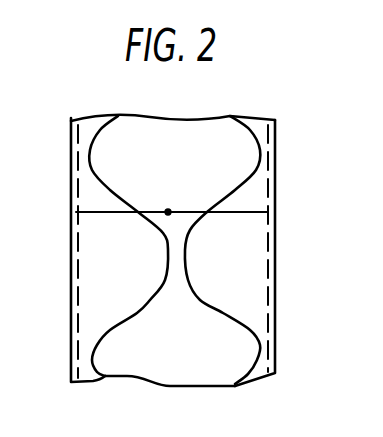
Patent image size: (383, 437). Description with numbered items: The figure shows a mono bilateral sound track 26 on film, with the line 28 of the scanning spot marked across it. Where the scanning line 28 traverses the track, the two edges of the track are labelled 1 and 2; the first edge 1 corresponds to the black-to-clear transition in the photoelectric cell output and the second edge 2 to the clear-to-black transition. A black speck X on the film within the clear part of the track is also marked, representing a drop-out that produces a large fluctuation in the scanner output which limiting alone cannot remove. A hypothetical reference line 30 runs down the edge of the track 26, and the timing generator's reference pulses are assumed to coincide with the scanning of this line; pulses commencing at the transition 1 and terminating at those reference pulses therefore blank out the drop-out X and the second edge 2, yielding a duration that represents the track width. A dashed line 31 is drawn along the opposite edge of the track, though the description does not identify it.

The first track edge 1 is at (139, 210).
The second track edge 2 is at (211, 209).
The black speck X is at (168, 209).
The mono bilateral sound track 26 is at (247, 160).
The scanning line 28 is at (250, 212).
The reference line 30 is at (270, 300).
The left side seal 31 is at (78, 307).